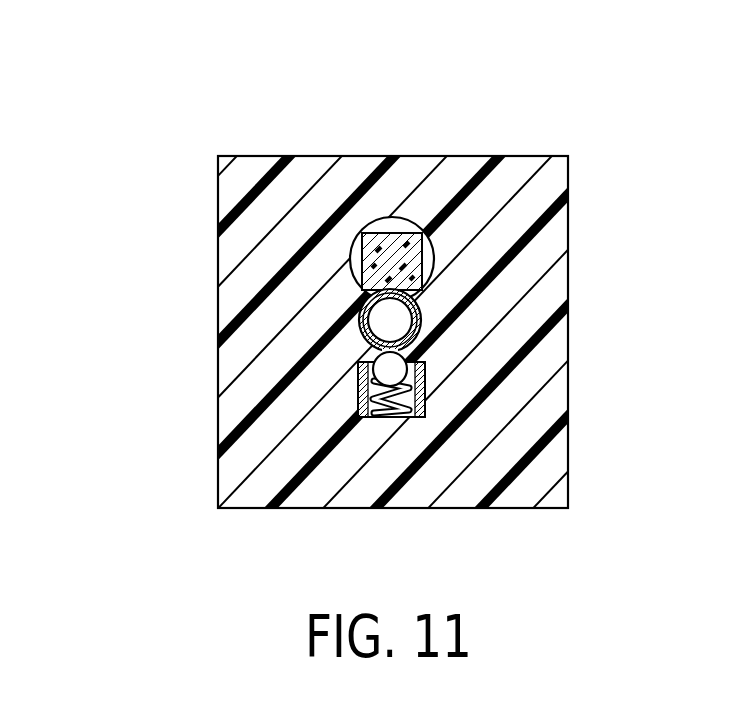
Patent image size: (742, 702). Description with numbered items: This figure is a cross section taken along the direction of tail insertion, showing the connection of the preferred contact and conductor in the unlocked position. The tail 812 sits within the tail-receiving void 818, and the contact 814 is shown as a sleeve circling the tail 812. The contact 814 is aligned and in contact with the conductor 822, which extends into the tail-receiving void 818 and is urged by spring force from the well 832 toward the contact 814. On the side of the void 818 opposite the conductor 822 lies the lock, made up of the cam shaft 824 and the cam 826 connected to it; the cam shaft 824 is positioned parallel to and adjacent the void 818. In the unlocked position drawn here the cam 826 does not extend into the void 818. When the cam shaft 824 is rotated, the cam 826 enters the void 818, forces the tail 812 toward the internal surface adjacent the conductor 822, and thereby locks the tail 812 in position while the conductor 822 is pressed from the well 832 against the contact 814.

The tail 812 is at (388, 319).
The contact 814 is at (357, 303).
The tail-receiving void 818 is at (420, 340).
The conductor 822 is at (409, 359).
The cam shaft 824 is at (386, 245).
The cam 826 is at (394, 217).
The well 832 is at (390, 418).